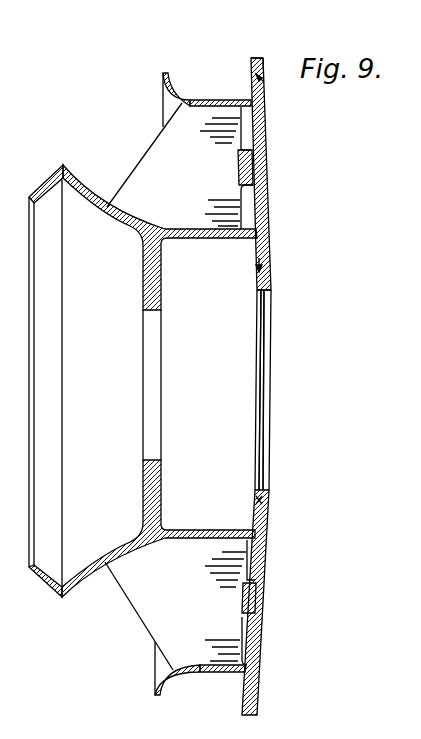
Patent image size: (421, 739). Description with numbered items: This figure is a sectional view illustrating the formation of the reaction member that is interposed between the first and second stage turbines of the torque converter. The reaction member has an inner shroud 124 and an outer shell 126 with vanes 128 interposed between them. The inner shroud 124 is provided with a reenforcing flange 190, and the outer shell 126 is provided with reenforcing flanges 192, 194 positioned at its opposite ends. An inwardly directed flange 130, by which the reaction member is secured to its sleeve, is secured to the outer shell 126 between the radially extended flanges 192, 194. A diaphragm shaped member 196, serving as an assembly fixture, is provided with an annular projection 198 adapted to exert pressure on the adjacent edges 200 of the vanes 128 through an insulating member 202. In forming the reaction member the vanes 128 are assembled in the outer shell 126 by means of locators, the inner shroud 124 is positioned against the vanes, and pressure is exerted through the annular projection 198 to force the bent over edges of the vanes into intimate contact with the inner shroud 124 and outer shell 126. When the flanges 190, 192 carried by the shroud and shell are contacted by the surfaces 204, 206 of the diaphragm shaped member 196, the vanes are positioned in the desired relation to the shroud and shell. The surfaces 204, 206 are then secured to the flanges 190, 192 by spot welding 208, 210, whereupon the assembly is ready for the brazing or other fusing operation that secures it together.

The inner shroud 124 is at (208, 100).
The outer shell 126 is at (221, 238).
The vanes 128 is at (165, 126).
The inwardly extending flange 130 is at (156, 295).
The reenforcing flange 190 is at (249, 70).
The reenforcing flange 192 is at (258, 276).
The reenforcing flange 194 is at (52, 154).
The diaphragm shaped member 196 is at (322, 209).
The annular projection 198 is at (251, 182).
The adjacent edges of the vanes 200 is at (241, 133).
The insulating member 202 is at (250, 163).
The surface of the diaphragm shaped member 204 is at (264, 68).
The surface of the diaphragm shaped member 206 is at (271, 280).
The spot welding 208 is at (264, 82).
The spot welding 210 is at (262, 262).